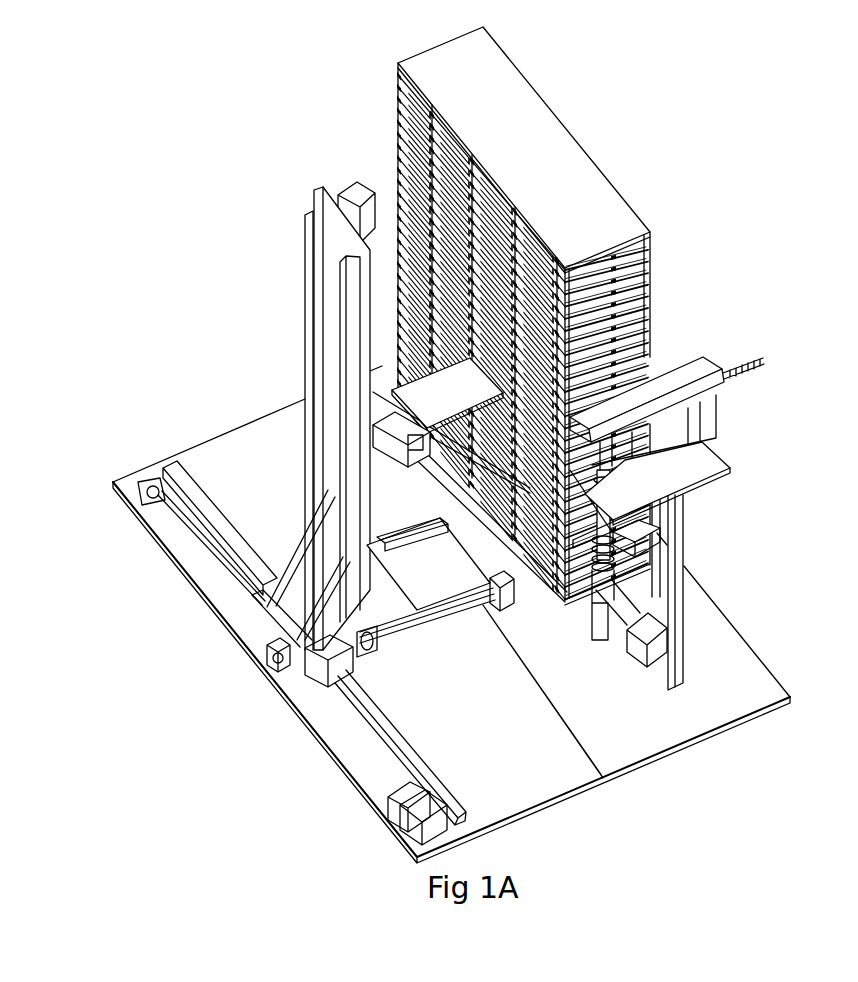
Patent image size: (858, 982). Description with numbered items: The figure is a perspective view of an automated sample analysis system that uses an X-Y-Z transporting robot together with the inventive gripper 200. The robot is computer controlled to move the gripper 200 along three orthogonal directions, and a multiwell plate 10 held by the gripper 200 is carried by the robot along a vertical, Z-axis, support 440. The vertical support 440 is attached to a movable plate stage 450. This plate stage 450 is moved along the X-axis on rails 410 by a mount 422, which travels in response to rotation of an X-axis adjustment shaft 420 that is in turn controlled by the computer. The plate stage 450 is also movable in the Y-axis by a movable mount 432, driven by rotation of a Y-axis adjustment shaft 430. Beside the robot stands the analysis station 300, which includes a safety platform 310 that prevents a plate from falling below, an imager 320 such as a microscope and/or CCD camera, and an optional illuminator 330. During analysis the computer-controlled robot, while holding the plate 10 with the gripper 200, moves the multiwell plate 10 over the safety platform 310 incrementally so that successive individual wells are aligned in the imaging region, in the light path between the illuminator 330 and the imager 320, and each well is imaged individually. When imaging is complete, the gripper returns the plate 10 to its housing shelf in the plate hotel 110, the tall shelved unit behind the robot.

The plate hotel 110 is at (545, 160).
The multiwell plate 10 is at (457, 397).
The gripper 200 is at (330, 450).
The vertical support 440 is at (305, 400).
The illuminator 330 is at (670, 388).
The safety platform 310 is at (697, 470).
The imager 320 is at (643, 537).
The analysis station 300 is at (700, 553).
The plate stage 450 is at (417, 596).
The Y-axis adjustment shaft 430 is at (503, 626).
The movable mount 432 is at (387, 640).
The mount 422 is at (267, 658).
The X-axis adjustment shaft 420 is at (350, 738).
The rails 410 is at (598, 778).